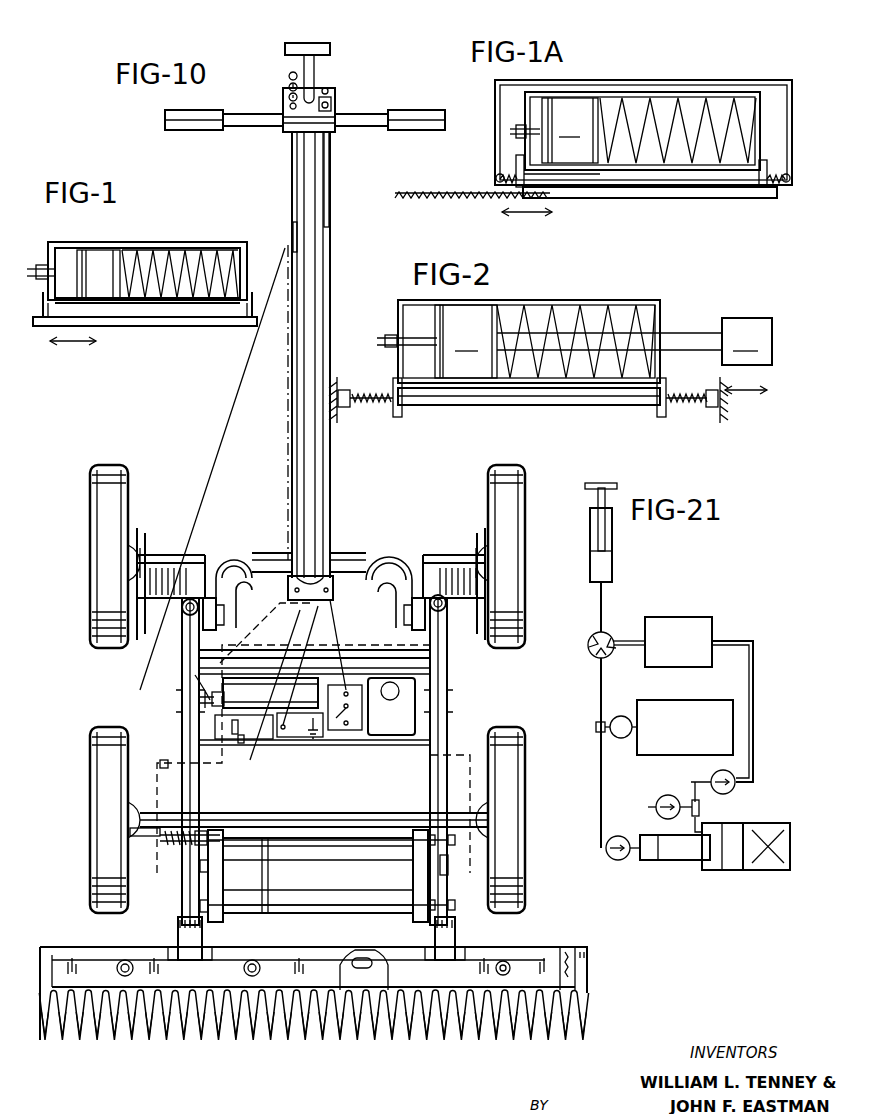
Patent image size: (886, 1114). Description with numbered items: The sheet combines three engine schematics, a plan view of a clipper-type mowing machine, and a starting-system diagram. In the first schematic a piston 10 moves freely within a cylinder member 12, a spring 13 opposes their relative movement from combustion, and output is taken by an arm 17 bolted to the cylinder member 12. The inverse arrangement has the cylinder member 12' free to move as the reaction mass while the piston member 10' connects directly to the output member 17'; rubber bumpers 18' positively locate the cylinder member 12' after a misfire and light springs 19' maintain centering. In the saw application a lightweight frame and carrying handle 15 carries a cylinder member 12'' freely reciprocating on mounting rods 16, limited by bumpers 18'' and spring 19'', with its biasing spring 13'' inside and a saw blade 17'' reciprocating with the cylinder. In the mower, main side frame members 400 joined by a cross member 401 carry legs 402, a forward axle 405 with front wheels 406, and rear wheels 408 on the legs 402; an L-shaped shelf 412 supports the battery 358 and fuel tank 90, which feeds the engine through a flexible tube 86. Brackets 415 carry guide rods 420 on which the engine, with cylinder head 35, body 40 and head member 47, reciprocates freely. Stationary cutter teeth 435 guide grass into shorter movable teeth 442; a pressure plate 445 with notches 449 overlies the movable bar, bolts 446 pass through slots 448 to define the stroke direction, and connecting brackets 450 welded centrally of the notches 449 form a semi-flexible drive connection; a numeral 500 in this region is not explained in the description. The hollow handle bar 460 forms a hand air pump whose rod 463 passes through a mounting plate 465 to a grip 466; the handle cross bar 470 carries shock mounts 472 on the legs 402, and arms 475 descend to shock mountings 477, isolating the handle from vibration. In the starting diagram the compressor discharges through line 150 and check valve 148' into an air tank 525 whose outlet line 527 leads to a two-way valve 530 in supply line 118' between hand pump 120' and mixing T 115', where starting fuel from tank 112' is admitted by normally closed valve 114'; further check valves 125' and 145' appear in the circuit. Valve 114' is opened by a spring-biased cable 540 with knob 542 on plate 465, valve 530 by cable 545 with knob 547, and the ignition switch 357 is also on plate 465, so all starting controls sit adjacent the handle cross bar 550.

In FIG. 1, the piston 10 is at (101, 255).
In FIG. 1A, the piston 10 is at (570, 130).
In FIG. 1, the cylinder member 12 is at (180, 255).
In FIG. 10, the cylinder member 12 is at (274, 875).
In FIG. 1, the spring 13 is at (180, 255).
In FIG. 1A, the frame and carrying handle 15 is at (707, 80).
In FIG. 1A, the mounting rods 16 is at (538, 188).
In FIG. 1, the arm 17 is at (145, 339).
In FIG. 2, the piston member 10' is at (466, 341).
In FIG. 2, the cylinder member 12' is at (529, 327).
In FIG. 2, the output member 17' is at (634, 341).
In FIG. 2, the shock mounts or bumpers 18' is at (528, 418).
In FIG. 2, the light springs 19' is at (541, 411).
In FIG. 1A, the cylinder member 12'' is at (642, 104).
In FIG. 1A, the coil spring 13'' is at (678, 101).
In FIG. 1A, the saw blade 17'' is at (650, 206).
In FIG. 1A, the bumpers 18'' is at (620, 153).
In FIG. 1A, the spring 19'' is at (622, 161).
In FIG. 10, the cylinder head member 35 is at (225, 880).
In FIG. 10, the body 40 is at (313, 926).
In FIG. 10, the head member 47 is at (425, 838).
In FIG. 10, the outlet tube 86 is at (470, 768).
In FIG. 10, the fuel tank 90 is at (418, 712).
In FIG. 21, the starting fuel tank 112' is at (685, 714).
In FIG. 10, the starting fuel tank 112' is at (295, 742).
In FIG. 21, the valve 114' is at (626, 706).
In FIG. 10, the valve 114' is at (259, 762).
In FIG. 10, the mixing T 115' is at (201, 720).
In FIG. 21, the supply line 118' is at (576, 710).
In FIG. 10, the supply line 118' is at (148, 754).
In FIG. 21, the hand pump 120' is at (628, 532).
In FIG. 21, the check valve 125' is at (693, 856).
In FIG. 21, the check valve 145' is at (665, 787).
In FIG. 21, the check valve 148' is at (729, 801).
In FIG. 21, the outlet line 150 is at (753, 688).
In FIG. 10, the control switch 357 is at (331, 103).
In FIG. 10, the battery 358 is at (316, 752).
In FIG. 10, the main side frame members 400 is at (448, 666).
In FIG. 10, the cross member 401 is at (378, 660).
In FIG. 10, the legs 402 is at (166, 555).
In FIG. 10, the forward axle 405 is at (340, 816).
In FIG. 10, the front wheels 406 is at (95, 760).
In FIG. 10, the rear wheels 408 is at (95, 498).
In FIG. 10, the cross-bracket or shelf 412 is at (347, 732).
In FIG. 10, the brackets 415 is at (205, 882).
In FIG. 10, the guide rods 420 is at (440, 866).
In FIG. 10, the cutter teeth 435 is at (402, 1030).
In FIG. 10, the teeth 442 is at (312, 1030).
In FIG. 10, the stationary pressure plate 445 is at (100, 950).
In FIG. 10, the bolts 446 is at (505, 962).
In FIG. 10, the slots 448 is at (350, 953).
In FIG. 10, the elongated notches 449 is at (204, 960).
In FIG. 10, the connecting brackets 450 is at (185, 942).
In FIG. 10, the hollow handle bar 460 is at (320, 233).
In FIG. 10, the rod 463 is at (318, 63).
In FIG. 10, the mounting plate 465 is at (334, 130).
In FIG. 10, the grip 466 is at (295, 45).
In FIG. 10, the handle cross bar 470 is at (282, 556).
In FIG. 10, the Lord shock mounts 472 is at (208, 622).
In FIG. 10, the supporting arms 475 is at (230, 552).
In FIG. 10, the shock mountings 477 is at (222, 578).
In FIG. 10, the screw 500 is at (198, 832).
In FIG. 21, the air reservoir or tank 525 is at (697, 620).
In FIG. 10, the air reservoir or tank 525 is at (250, 688).
In FIG. 21, the outlet line 527 is at (630, 640).
In FIG. 21, the two-way valve 530 is at (588, 653).
In FIG. 10, the two-way valve 530 is at (197, 676).
In FIG. 10, the operating cable 540 is at (288, 450).
In FIG. 10, the control knob 542 is at (292, 78).
In FIG. 10, the cable 545 is at (245, 368).
In FIG. 10, the knob 547 is at (291, 103).
In FIG. 10, the handle cross bar 550 is at (243, 113).